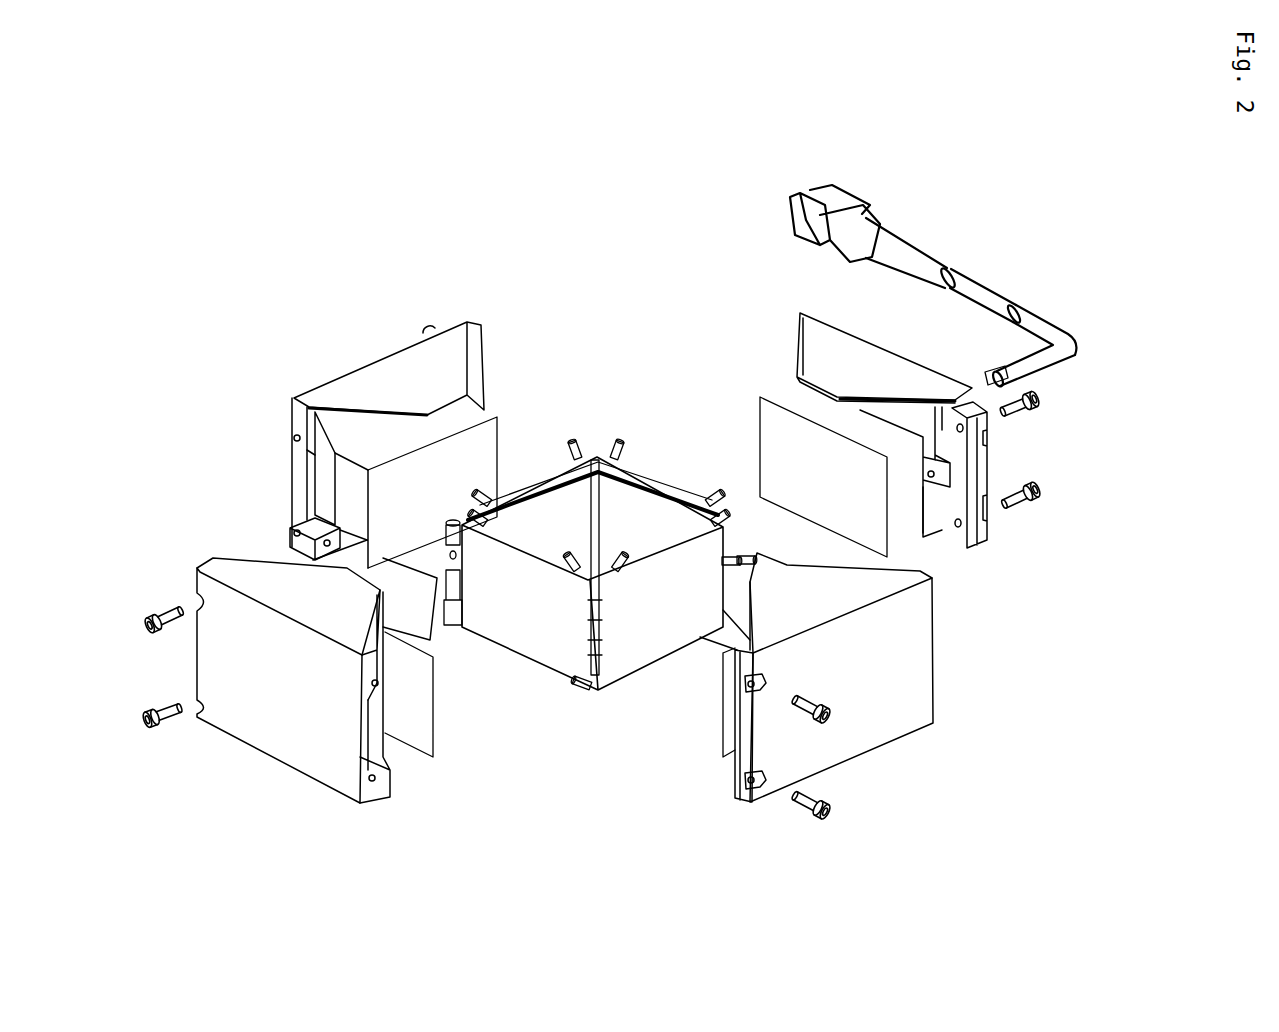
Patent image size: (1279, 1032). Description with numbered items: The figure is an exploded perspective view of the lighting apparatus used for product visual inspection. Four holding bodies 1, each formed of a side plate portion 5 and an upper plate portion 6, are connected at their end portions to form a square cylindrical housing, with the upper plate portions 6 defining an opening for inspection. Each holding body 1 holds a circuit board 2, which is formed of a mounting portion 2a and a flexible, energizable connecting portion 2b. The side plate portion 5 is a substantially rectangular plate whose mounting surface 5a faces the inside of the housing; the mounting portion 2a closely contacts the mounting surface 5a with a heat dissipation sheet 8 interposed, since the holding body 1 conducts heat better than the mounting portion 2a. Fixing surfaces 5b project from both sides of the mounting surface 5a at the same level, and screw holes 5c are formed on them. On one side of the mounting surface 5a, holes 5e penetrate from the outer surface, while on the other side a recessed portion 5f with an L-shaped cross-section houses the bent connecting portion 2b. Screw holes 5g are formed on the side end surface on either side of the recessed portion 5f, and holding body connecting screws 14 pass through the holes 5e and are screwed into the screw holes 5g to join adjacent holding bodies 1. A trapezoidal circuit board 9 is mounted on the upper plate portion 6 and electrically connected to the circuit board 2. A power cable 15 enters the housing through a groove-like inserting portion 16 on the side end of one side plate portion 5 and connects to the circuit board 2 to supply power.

The holding body 1 is at (385, 343).
The circuit board 2 is at (553, 682).
The mounting portion 2a is at (540, 612).
The connecting portion 2b is at (475, 500).
The side plate portion 5 is at (295, 420).
The mounting surface 5a is at (867, 423).
The fixing surface 5b is at (930, 478).
The screw hole 5c is at (930, 475).
The hole 5e is at (958, 525).
The recessed portion 5f is at (322, 480).
The screw hole 5g is at (297, 438).
The upper plate portion 6 is at (441, 367).
The heat dissipation sheet 8 is at (762, 403).
The trapezoidal circuit board 9 is at (652, 522).
The holding body connecting screw 14 is at (1040, 500).
The power cable 15 is at (1058, 325).
The inserting portion 16 is at (975, 408).